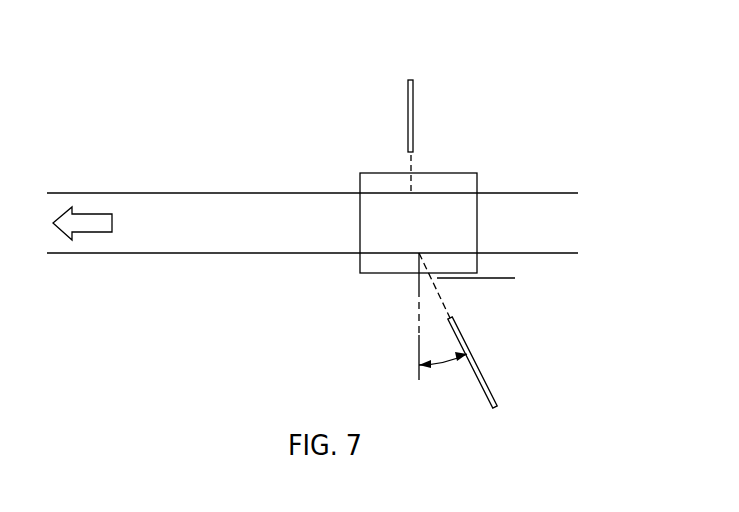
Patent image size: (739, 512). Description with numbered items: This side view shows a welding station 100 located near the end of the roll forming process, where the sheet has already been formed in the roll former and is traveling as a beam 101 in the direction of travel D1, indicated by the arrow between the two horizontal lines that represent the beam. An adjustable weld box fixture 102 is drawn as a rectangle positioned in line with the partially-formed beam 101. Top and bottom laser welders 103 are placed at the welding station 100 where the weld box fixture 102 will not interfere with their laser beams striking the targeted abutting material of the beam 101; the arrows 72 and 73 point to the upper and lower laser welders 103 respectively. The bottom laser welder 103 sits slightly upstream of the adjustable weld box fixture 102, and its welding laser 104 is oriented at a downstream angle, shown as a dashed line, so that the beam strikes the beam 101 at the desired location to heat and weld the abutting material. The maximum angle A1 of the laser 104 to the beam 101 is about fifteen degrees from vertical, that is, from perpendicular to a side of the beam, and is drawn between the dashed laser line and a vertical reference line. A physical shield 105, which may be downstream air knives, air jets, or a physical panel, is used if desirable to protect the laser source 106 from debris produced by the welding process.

The welding station 100 is at (156, 135).
The beam 101 is at (538, 193).
The adjustable weld box fixture 102 is at (457, 172).
The laser welder 103 is at (407, 102).
The welding laser 104 is at (443, 300).
The physical shield 105 is at (505, 281).
The laser source 106 is at (419, 255).
The first sensor position 72 is at (398, 82).
The second sensor position 73 is at (511, 392).
The direction of travel D1 is at (88, 213).
The maximum angle A1 is at (447, 365).